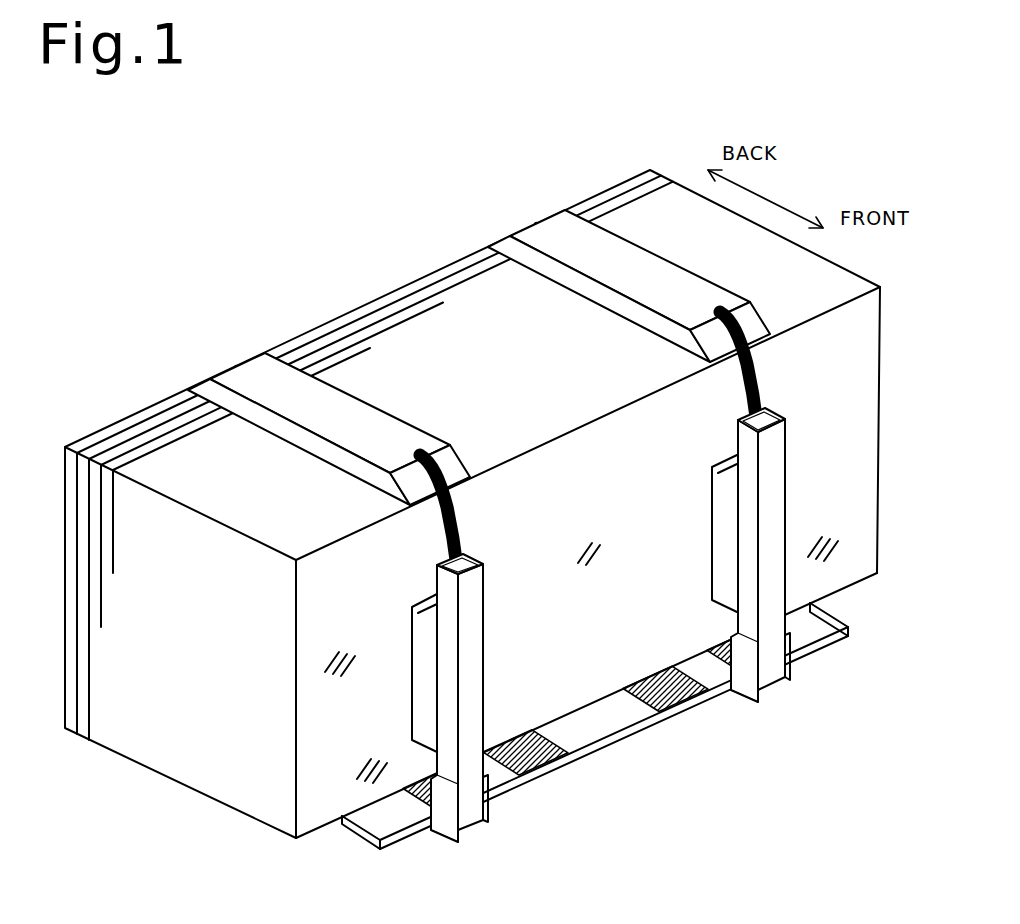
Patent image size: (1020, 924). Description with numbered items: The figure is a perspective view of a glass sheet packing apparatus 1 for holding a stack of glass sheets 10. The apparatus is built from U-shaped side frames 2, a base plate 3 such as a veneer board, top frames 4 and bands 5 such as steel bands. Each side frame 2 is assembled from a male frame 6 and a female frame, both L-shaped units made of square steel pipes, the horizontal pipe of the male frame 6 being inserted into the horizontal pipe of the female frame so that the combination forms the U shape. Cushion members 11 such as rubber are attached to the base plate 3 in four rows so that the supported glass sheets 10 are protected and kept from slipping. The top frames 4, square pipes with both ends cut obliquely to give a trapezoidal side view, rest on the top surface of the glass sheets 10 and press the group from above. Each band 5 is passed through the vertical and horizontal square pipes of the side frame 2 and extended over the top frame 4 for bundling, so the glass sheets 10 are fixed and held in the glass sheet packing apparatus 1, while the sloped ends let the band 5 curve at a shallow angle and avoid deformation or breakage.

The glass sheet packing apparatus 1 is at (293, 323).
The glass sheets 10 is at (208, 787).
The side frame 2 is at (630, 625).
The base plate 3 is at (607, 725).
The top frame 4 is at (537, 237).
The band 5 is at (762, 383).
The male frame 6 is at (468, 703).
The cushion member 11 is at (552, 762).